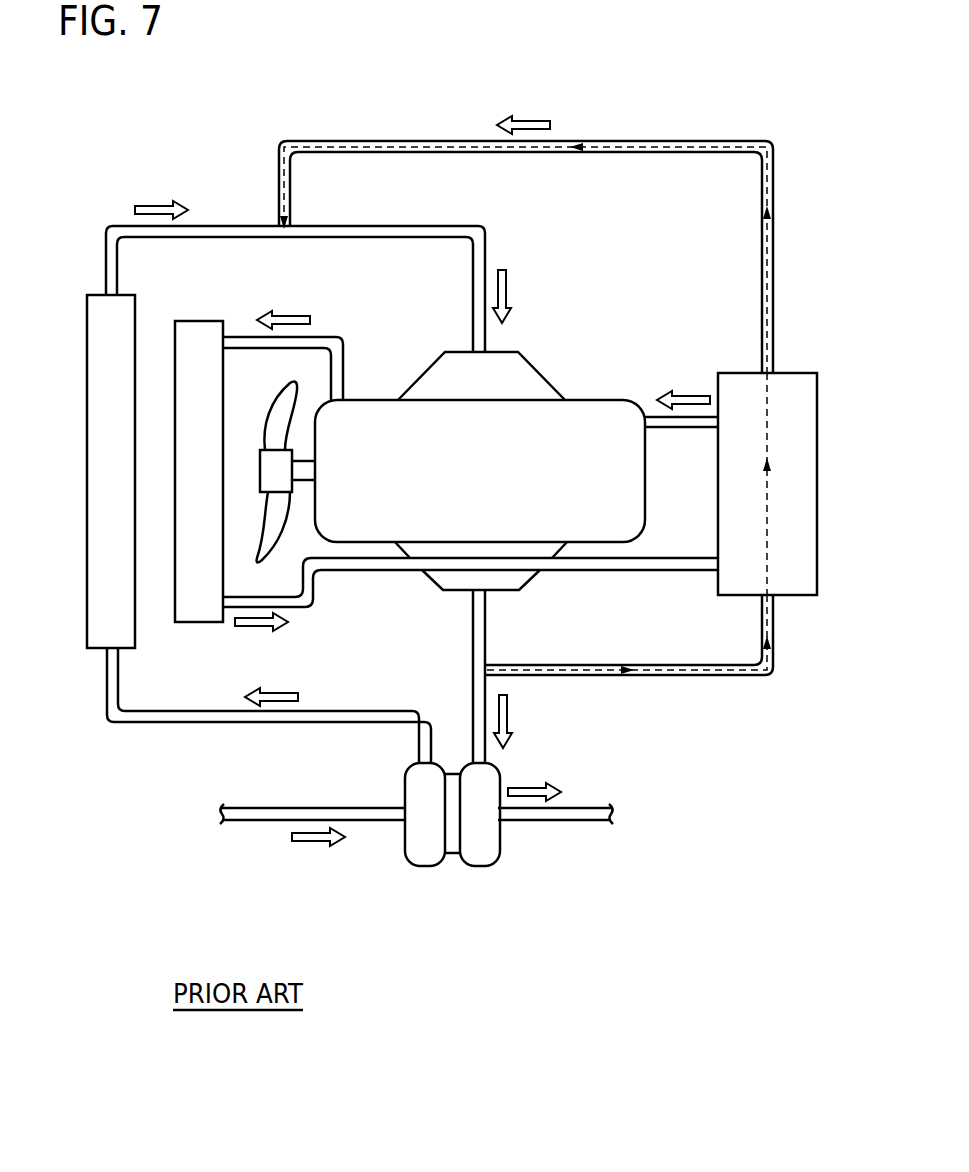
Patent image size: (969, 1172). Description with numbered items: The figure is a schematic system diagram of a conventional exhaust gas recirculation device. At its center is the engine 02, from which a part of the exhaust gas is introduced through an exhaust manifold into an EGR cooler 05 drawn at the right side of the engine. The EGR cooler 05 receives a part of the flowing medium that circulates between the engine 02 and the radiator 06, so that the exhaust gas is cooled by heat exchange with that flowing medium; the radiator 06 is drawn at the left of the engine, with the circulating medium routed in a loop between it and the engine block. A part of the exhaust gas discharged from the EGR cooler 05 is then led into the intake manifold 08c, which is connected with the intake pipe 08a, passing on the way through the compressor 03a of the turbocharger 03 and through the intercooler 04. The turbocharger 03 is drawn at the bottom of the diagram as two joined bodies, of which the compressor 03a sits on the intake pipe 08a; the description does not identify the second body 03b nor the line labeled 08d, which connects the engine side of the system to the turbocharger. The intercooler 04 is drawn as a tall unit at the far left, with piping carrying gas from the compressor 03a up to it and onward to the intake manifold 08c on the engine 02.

The engine 02 is at (603, 400).
The turbocharger 03 is at (457, 874).
The compressor 03a is at (425, 867).
The second heat exchanger section 03b is at (477, 867).
The intercooler 04 is at (98, 293).
The EGR cooler 05 is at (797, 370).
The radiator 06 is at (200, 320).
The intake pipe 08a is at (257, 823).
The intake manifold 08c is at (473, 299).
The coolant pipe 08d is at (473, 630).